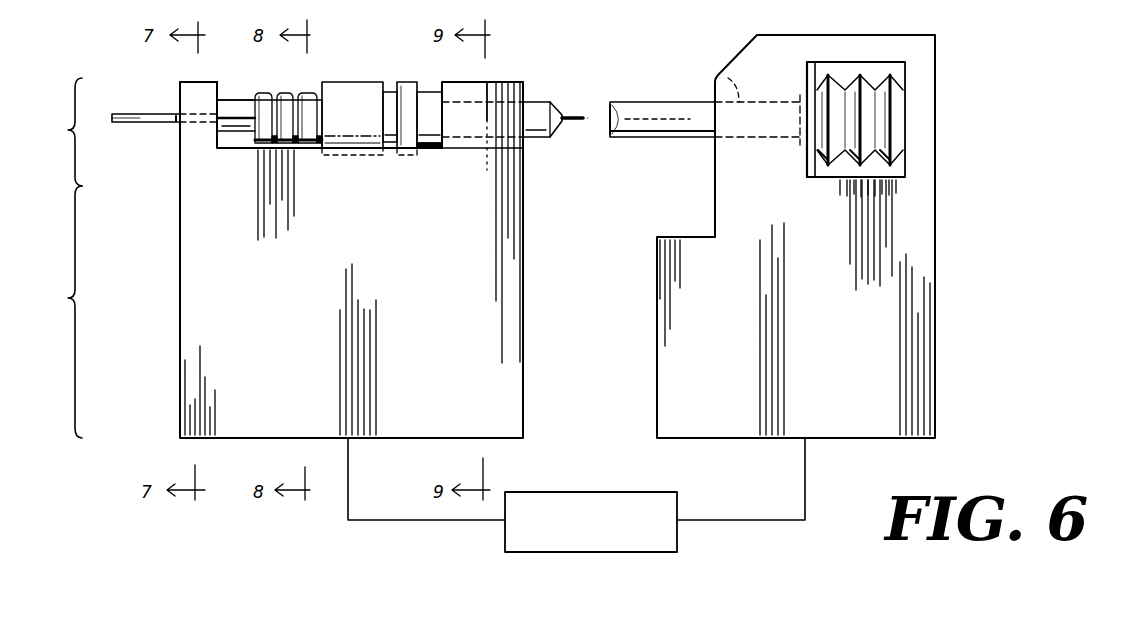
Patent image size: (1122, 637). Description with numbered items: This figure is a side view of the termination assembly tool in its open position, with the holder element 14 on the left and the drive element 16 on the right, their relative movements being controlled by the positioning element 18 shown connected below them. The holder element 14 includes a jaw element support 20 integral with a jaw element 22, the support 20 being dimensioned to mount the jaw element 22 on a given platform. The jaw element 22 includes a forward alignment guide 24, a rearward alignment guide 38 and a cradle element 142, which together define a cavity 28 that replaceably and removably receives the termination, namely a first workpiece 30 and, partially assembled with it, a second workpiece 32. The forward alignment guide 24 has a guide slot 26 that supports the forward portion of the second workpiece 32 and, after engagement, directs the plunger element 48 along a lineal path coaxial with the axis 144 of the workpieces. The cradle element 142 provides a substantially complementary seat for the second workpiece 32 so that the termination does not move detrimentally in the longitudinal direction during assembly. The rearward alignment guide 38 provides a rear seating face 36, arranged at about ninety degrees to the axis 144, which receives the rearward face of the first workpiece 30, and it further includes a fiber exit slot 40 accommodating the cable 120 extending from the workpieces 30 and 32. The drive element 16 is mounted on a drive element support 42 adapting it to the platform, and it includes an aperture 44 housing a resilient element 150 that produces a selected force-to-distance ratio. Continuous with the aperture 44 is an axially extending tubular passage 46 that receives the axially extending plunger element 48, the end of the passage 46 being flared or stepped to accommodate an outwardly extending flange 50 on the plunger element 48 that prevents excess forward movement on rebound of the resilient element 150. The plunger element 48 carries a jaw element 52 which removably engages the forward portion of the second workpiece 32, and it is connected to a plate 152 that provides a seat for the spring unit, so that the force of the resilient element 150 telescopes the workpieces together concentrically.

The holder element 14 is at (174, 280).
The drive element 16 is at (967, 210).
The positioning element 18 is at (592, 527).
The jaw element support 20 is at (60, 312).
The jaw element 22 is at (60, 132).
The forward alignment guide 24 is at (487, 92).
The guide slot 26 is at (533, 103).
The cavity 28 is at (388, 76).
The first workpiece 30 is at (232, 110).
The second workpiece 32 is at (343, 92).
The rear seating face 36 is at (222, 86).
The rearward alignment guide 38 is at (184, 82).
The fiber exit slot 40 is at (179, 124).
The drive element support 42 is at (827, 313).
The aperture 44 is at (897, 168).
The tubular passage 46 is at (714, 74).
The plunger element 48 is at (682, 135).
The flange 50 is at (800, 95).
The jaw element 52 is at (610, 125).
The cable 120 is at (136, 117).
The cradle element 142 is at (428, 150).
The axis 144 is at (572, 93).
The resilient element 150 is at (900, 86).
The plate 152 is at (816, 70).